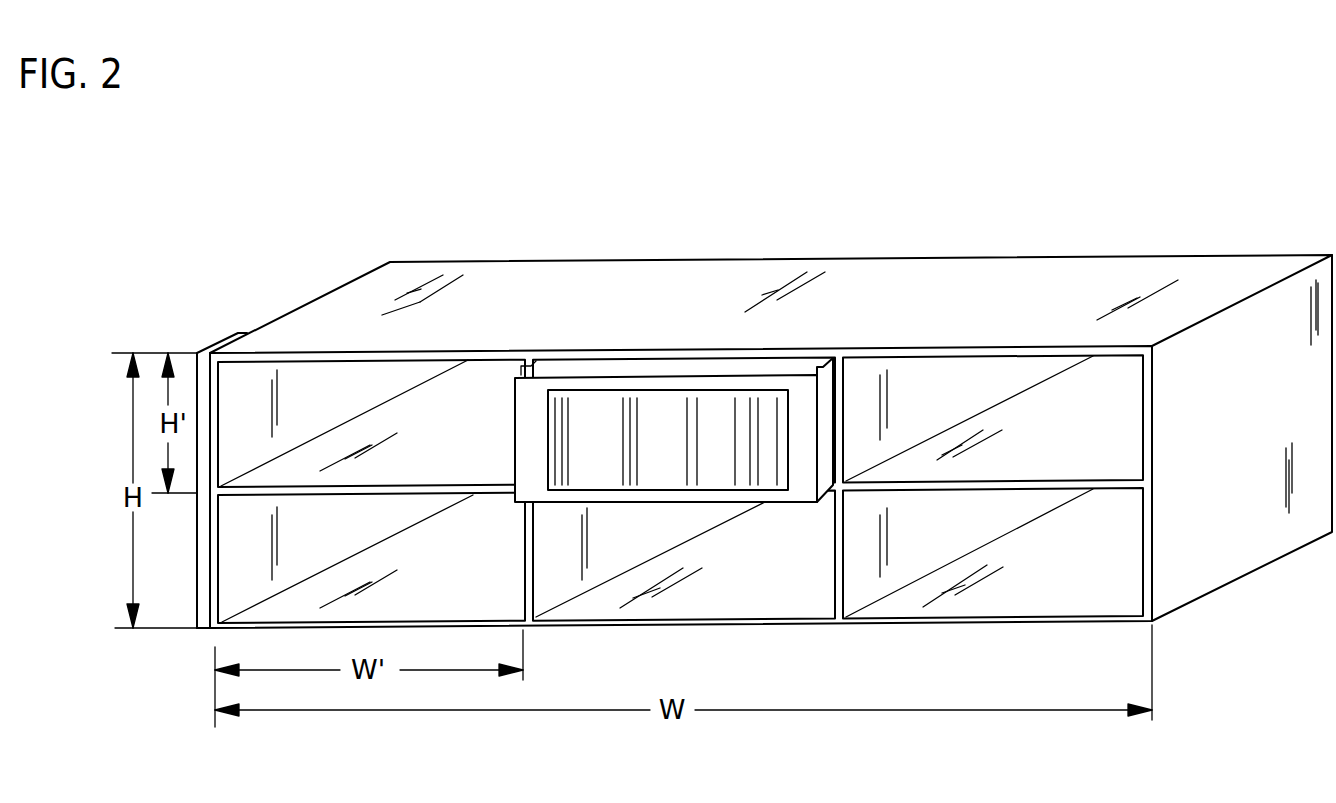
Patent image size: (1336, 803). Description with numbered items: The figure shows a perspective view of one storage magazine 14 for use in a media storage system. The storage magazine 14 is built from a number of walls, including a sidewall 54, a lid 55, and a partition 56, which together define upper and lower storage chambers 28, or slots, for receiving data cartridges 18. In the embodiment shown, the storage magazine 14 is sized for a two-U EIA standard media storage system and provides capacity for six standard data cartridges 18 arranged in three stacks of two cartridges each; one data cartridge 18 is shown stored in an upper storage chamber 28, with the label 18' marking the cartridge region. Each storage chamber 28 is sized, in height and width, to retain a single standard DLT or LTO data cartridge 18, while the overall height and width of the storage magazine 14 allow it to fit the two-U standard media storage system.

The storage magazine 14 is at (764, 412).
The data cartridge 18 is at (697, 399).
The module locating tab 18' is at (562, 340).
The storage chamber 28 is at (1075, 564).
The sidewall 54 is at (1288, 398).
The lid 55 is at (1040, 323).
The partition 56 is at (940, 403).